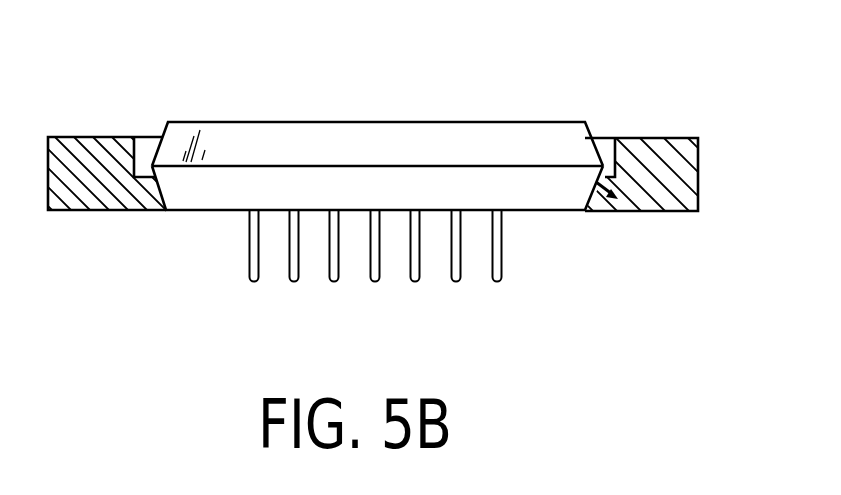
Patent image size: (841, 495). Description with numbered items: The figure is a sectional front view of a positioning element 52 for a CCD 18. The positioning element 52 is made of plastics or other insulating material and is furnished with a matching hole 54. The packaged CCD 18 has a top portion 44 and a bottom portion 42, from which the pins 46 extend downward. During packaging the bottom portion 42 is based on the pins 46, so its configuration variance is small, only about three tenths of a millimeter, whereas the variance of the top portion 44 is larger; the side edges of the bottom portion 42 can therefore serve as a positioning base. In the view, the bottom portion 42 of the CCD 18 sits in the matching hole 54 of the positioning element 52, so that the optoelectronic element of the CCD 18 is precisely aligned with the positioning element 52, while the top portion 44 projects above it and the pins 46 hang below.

The CCD 18 is at (355, 193).
The bottom portion 42 is at (196, 202).
The top portion 44 is at (543, 137).
The pins 46 is at (500, 283).
The positioning element 52 is at (657, 151).
The matching hole 54 is at (630, 212).